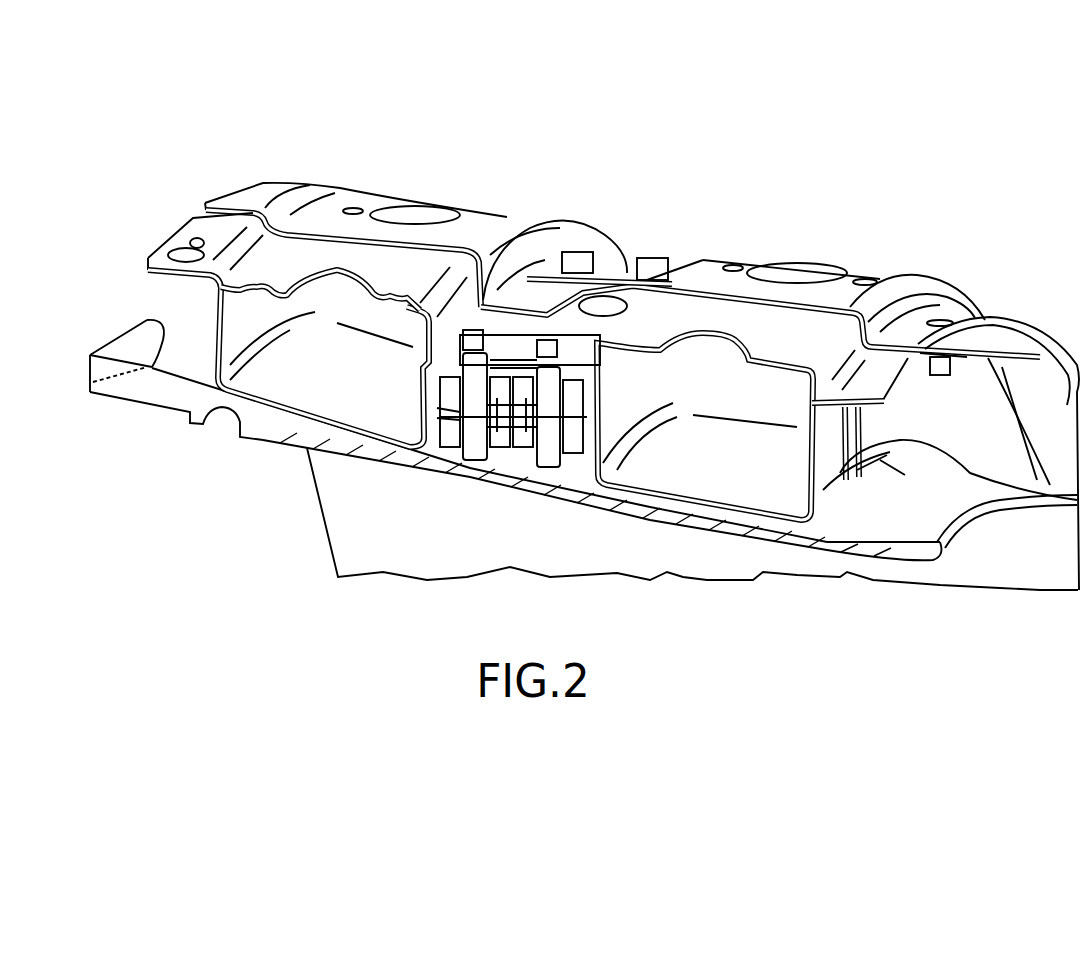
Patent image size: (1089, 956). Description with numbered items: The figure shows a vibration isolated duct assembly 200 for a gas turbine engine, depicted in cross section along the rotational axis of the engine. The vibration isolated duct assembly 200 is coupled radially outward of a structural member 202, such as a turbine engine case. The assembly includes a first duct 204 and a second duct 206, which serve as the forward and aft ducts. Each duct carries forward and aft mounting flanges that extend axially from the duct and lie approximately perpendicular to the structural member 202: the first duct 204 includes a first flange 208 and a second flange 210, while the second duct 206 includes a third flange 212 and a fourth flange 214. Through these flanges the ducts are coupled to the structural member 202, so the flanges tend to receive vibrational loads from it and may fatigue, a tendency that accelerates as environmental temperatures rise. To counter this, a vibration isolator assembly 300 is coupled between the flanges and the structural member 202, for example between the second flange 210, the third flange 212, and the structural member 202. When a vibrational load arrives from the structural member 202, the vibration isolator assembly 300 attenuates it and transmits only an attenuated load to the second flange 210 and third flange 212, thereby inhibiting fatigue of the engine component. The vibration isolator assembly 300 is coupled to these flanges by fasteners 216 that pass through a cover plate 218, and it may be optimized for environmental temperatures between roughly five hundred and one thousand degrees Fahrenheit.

The vibration isolated duct assembly 200 is at (838, 126).
The structural member 202 is at (224, 410).
The first duct 204 is at (505, 217).
The second duct 206 is at (887, 284).
The first flange 208 is at (272, 190).
The second flange 210 is at (522, 330).
The third flange 212 is at (618, 296).
The fourth flange 214 is at (990, 313).
The fasteners 216 is at (488, 303).
The cover plate 218 is at (545, 325).
The vibration isolator assembly 300 is at (583, 301).